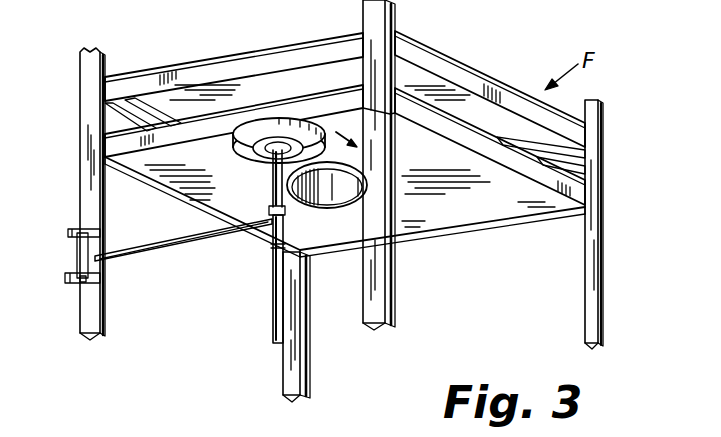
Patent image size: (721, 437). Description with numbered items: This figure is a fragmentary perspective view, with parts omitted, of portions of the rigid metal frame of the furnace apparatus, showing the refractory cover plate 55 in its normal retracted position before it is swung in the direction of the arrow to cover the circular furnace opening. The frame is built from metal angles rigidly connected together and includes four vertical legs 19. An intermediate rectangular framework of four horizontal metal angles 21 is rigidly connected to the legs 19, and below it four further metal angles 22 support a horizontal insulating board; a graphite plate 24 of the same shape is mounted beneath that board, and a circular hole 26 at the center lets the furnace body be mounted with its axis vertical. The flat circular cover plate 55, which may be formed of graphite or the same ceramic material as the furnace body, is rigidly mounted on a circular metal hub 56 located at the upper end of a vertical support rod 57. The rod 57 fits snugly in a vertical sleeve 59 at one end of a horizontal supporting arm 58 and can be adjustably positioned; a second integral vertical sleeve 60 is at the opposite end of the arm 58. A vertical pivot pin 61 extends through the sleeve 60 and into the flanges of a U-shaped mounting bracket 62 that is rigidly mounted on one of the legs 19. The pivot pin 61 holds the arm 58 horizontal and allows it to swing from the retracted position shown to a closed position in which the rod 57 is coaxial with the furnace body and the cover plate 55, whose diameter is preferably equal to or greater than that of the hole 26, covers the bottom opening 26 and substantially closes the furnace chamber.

The vertical legs 19 is at (85, 183).
The horizontal metal angles 21 is at (187, 73).
The metal angles 22 is at (340, 103).
The graphite plate 24 is at (500, 215).
The circular hole 26 is at (308, 204).
The refractory cover plate 55 is at (240, 150).
The circular metal hub 56 is at (266, 160).
The vertical support rod 57 is at (273, 310).
The horizontal supporting arm 58 is at (165, 243).
The vertical sleeve 59 is at (268, 213).
The vertical sleeve 60 is at (80, 243).
The vertical pivot pin 61 is at (85, 282).
The U-shaped mounting bracket 62 is at (72, 281).